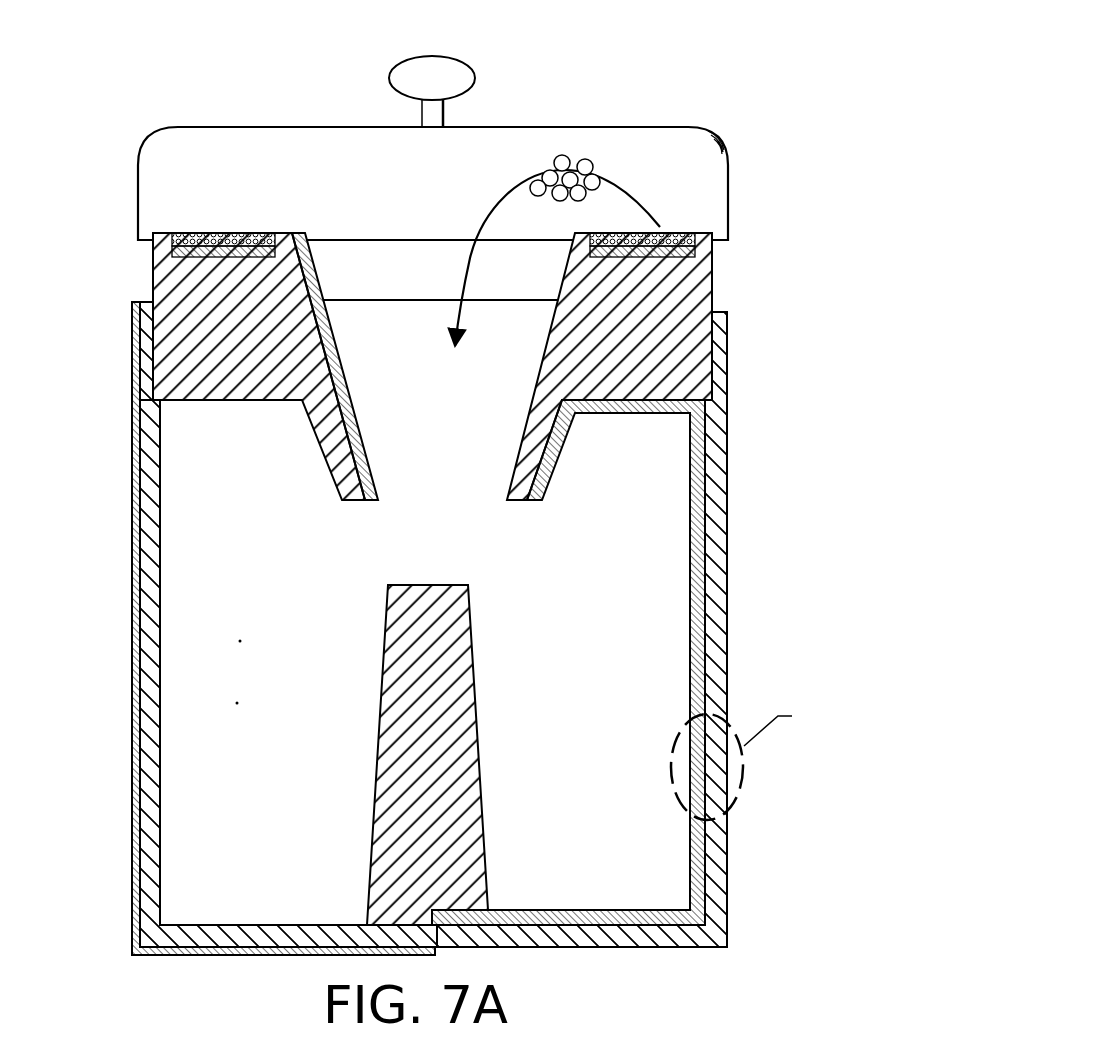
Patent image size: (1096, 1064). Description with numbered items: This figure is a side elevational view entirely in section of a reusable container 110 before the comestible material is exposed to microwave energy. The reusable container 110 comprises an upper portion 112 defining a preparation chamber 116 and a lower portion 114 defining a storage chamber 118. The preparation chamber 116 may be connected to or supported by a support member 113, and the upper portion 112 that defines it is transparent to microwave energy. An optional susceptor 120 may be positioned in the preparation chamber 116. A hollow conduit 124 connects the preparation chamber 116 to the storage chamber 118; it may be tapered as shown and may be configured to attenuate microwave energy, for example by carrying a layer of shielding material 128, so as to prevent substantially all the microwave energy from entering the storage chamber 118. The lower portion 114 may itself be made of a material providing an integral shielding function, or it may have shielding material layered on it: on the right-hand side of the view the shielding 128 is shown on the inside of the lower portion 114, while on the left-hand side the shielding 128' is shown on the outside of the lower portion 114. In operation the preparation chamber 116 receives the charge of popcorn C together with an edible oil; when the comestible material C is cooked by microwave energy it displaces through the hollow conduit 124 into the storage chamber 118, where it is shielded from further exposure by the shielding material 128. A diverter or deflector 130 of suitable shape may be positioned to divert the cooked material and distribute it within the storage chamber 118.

The reusable container 110 is at (474, 494).
The upper portion 112 is at (428, 334).
The support member 113 is at (137, 369).
The lower portion 114 is at (420, 607).
The preparation chamber 116 is at (726, 254).
The storage chamber 118 is at (659, 596).
The susceptor 120 is at (714, 266).
The hollow conduit 124 is at (455, 464).
The shielding material 128 is at (568, 662).
The shielding 128' is at (242, 607).
The diverter or deflector 130 is at (376, 790).
The charge of popcorn C is at (393, 213).